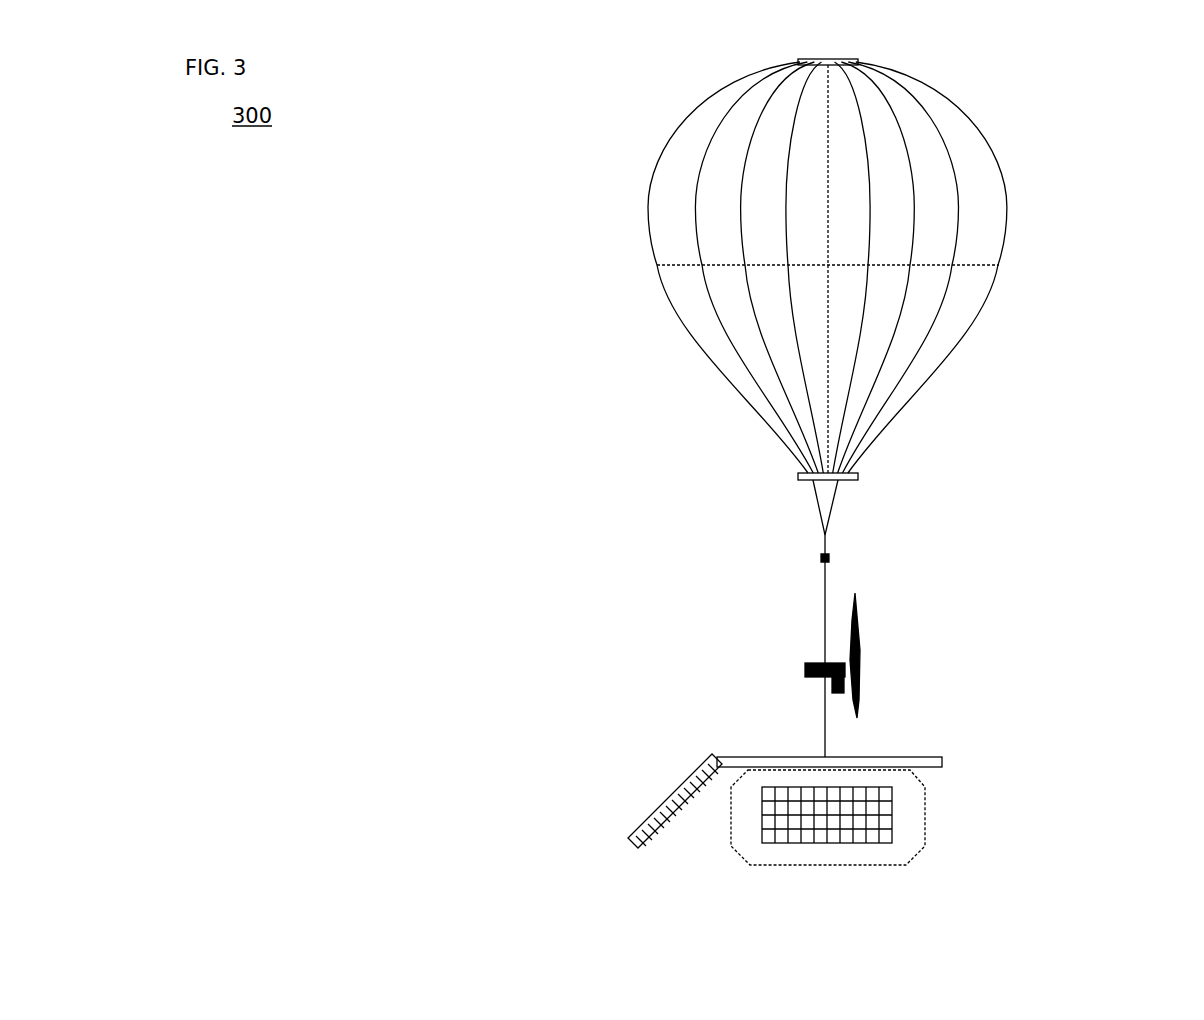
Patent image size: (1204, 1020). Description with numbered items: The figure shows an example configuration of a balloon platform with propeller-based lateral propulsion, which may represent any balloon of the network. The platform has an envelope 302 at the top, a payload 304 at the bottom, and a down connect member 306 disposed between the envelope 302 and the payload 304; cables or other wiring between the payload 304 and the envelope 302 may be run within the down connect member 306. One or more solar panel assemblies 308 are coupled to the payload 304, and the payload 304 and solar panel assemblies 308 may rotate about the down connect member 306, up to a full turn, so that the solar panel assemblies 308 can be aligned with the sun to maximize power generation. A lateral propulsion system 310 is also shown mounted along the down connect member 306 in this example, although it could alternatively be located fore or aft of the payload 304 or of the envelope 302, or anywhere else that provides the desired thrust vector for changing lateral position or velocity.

The envelope 302 is at (965, 326).
The payload 304 is at (925, 788).
The down connect member 306 is at (777, 587).
The solar panel assemblies 308 is at (650, 814).
The lateral propulsion system 310 is at (888, 661).